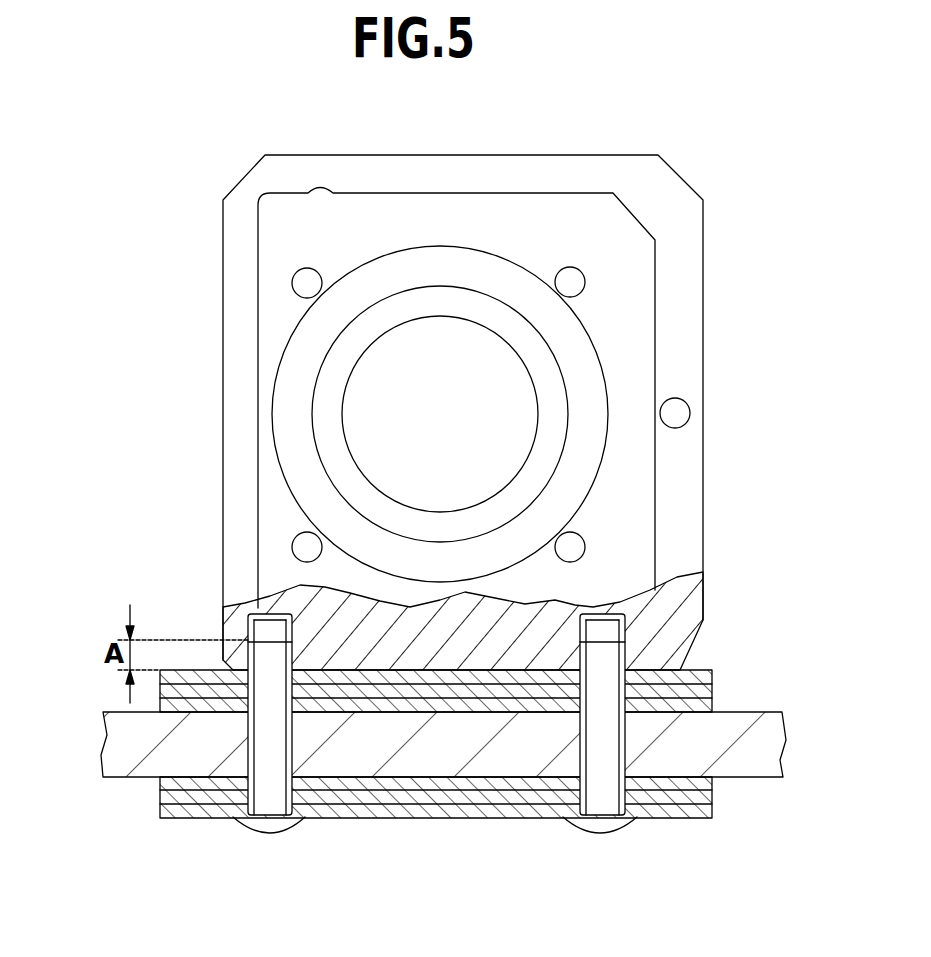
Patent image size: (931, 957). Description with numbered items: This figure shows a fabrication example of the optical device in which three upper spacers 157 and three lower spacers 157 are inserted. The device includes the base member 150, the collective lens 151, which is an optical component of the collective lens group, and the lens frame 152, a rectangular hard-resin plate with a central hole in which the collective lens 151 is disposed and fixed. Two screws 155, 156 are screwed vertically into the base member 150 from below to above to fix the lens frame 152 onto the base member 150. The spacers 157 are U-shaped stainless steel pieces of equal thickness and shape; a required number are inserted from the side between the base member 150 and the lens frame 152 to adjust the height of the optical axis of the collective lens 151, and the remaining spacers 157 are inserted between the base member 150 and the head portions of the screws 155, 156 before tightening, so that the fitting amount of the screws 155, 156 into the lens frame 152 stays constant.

The base member 150 is at (120, 740).
The collective lens 151 is at (382, 407).
The lens frame 152 is at (678, 300).
The screw 155 is at (265, 828).
The screw 156 is at (600, 828).
The spacers 157 is at (712, 700).